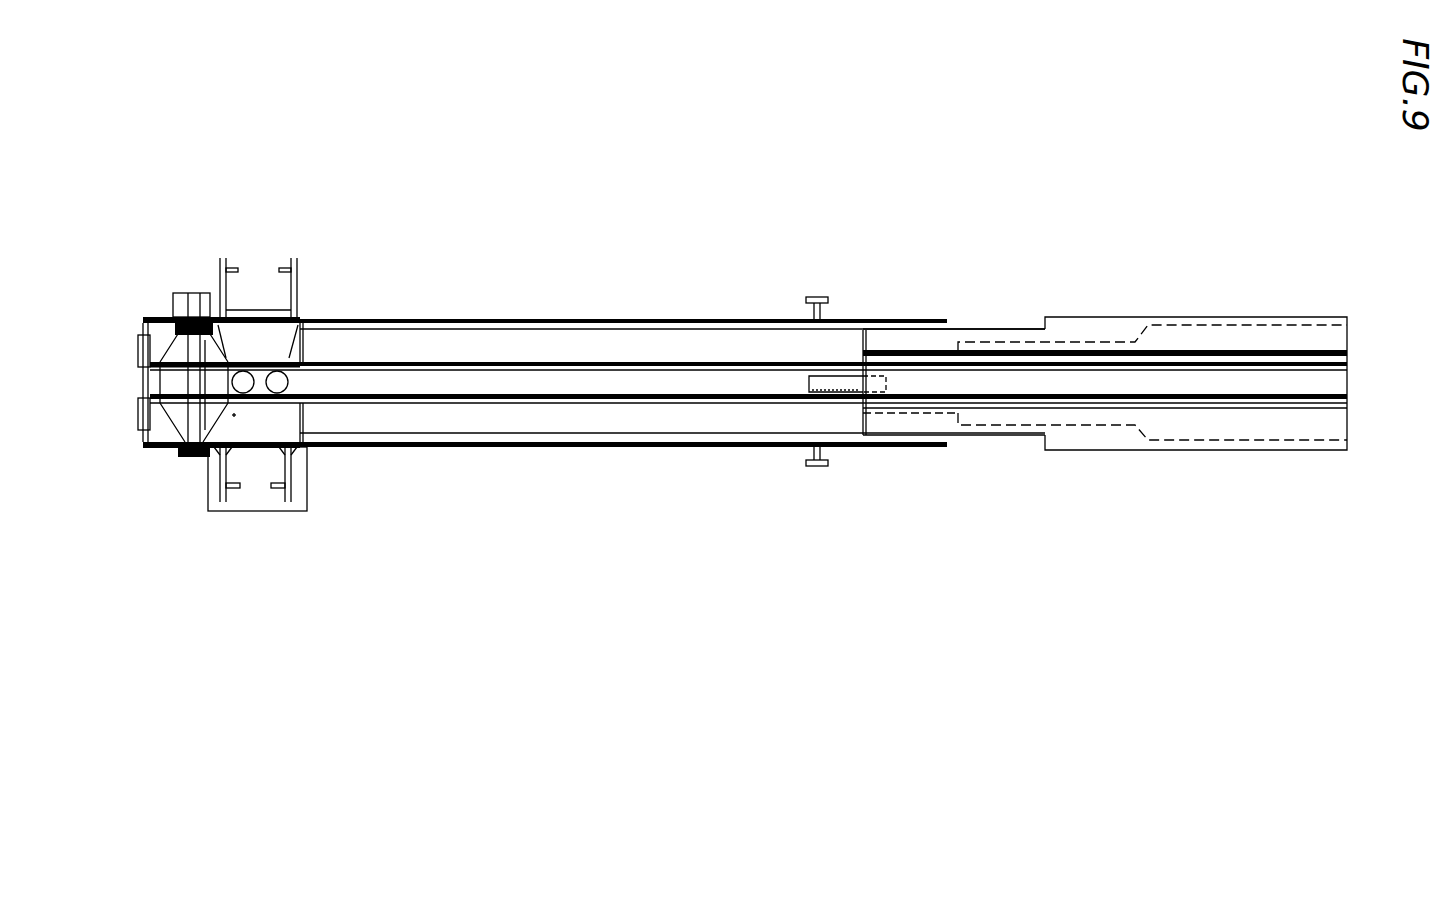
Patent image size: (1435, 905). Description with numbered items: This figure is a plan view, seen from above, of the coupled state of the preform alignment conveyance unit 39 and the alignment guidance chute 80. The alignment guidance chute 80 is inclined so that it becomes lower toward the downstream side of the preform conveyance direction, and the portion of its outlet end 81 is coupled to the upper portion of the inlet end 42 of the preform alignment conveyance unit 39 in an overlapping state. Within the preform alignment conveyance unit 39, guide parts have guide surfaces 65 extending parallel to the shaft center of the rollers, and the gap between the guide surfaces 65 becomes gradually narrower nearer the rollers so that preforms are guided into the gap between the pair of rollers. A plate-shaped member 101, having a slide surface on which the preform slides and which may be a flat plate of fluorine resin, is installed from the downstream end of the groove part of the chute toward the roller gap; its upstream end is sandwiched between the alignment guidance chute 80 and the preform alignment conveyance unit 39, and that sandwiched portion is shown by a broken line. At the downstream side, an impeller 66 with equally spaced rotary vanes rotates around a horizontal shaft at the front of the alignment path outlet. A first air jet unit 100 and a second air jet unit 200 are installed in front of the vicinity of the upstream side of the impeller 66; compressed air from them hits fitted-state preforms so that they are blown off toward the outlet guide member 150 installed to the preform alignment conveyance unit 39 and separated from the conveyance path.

The preform alignment conveyance unit 39 is at (641, 271).
The guide surface 65 is at (481, 347).
The outlet end 81 is at (874, 327).
The inlet end 42 is at (948, 327).
The alignment guidance chute 80 is at (1186, 288).
The plate-shaped member 101 is at (858, 392).
The first air jet unit 100 is at (218, 248).
The impeller 66 is at (166, 347).
The second air jet unit 200 is at (299, 251).
The outlet guide member 150 is at (262, 497).